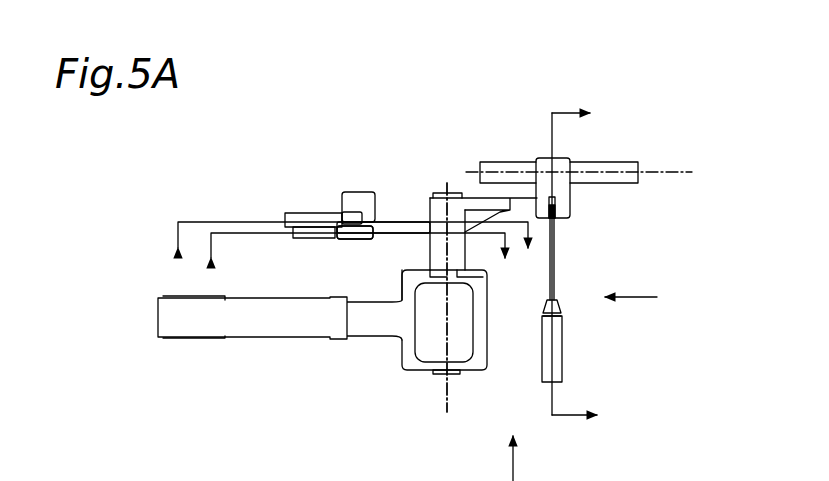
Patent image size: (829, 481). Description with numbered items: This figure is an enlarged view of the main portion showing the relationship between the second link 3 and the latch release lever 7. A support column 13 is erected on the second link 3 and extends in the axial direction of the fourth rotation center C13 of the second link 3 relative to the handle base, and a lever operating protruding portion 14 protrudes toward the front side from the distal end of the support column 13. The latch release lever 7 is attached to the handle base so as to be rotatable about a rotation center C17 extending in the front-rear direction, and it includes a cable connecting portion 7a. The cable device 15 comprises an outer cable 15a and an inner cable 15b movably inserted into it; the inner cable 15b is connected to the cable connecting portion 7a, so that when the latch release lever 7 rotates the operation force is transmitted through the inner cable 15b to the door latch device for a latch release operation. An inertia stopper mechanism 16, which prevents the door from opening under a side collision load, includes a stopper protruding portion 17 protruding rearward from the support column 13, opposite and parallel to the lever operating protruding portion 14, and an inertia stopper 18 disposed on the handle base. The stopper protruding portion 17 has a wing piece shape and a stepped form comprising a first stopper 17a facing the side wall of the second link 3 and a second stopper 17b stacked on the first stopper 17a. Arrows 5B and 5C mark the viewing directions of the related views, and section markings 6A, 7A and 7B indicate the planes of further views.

The second link 3 is at (293, 333).
The latch release lever 7 is at (622, 153).
The cable connecting portion 7a is at (568, 204).
The support column 13 is at (438, 250).
The lever operating protruding portion 14 is at (463, 203).
The cable device 15 is at (585, 328).
The outer cable 15a is at (563, 357).
The inner cable 15b is at (553, 272).
The inertia stopper mechanism 16 is at (367, 190).
The stopper protruding portion 17 is at (398, 218).
The first stopper 17a is at (353, 237).
The second stopper 17b is at (350, 213).
The inertia stopper 18 is at (300, 213).
The fourth rotation center C13 is at (447, 393).
The rotation center C17 is at (655, 172).
The arrow 5B is at (646, 293).
The arrow 5C is at (529, 458).
The section line 6A is at (589, 256).
The section line 7A is at (359, 259).
The section line 7B is at (618, 232).